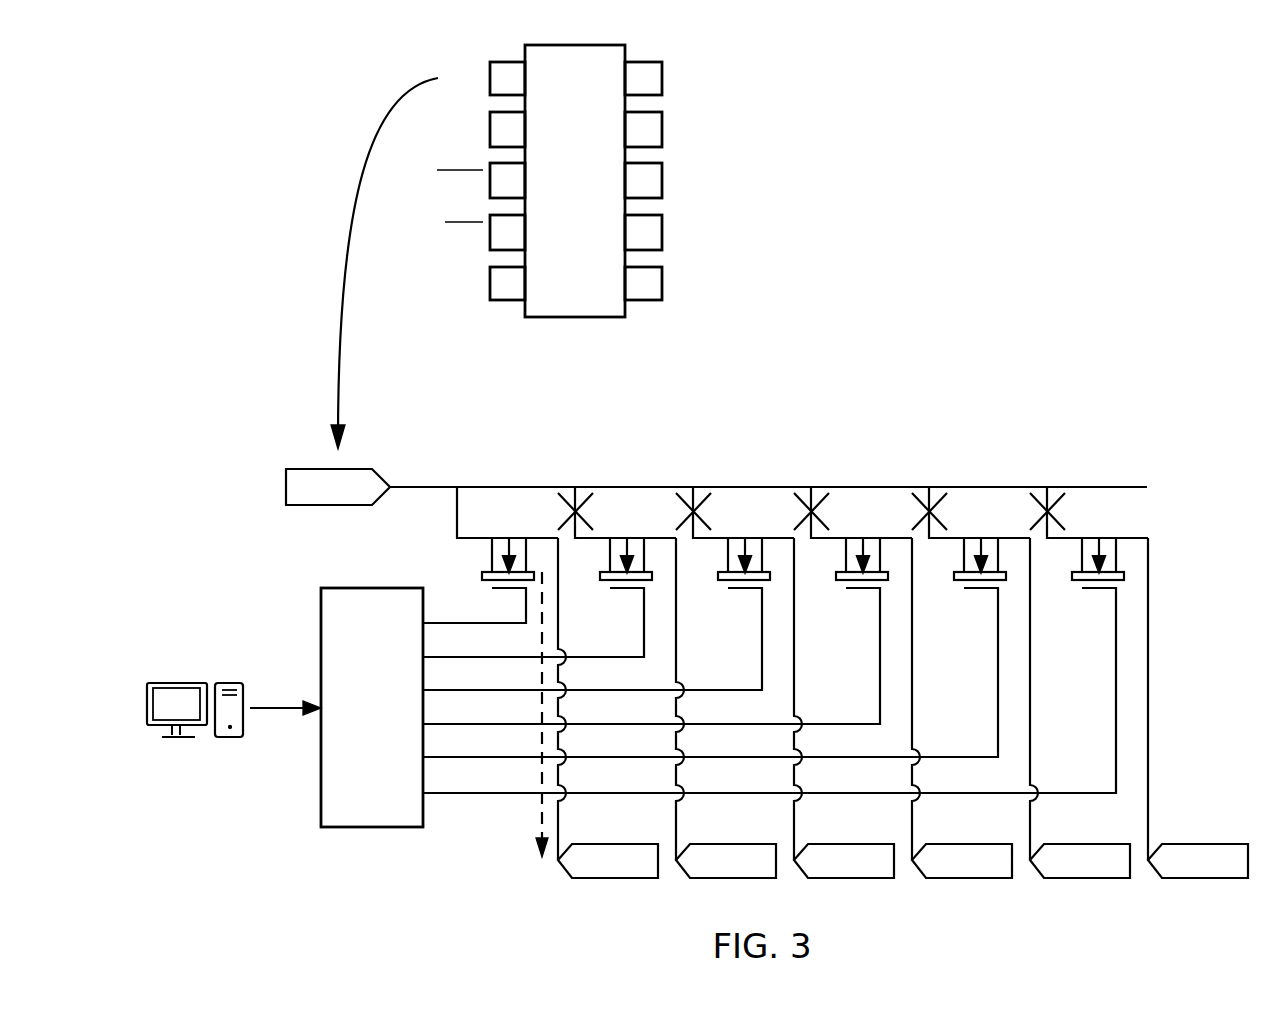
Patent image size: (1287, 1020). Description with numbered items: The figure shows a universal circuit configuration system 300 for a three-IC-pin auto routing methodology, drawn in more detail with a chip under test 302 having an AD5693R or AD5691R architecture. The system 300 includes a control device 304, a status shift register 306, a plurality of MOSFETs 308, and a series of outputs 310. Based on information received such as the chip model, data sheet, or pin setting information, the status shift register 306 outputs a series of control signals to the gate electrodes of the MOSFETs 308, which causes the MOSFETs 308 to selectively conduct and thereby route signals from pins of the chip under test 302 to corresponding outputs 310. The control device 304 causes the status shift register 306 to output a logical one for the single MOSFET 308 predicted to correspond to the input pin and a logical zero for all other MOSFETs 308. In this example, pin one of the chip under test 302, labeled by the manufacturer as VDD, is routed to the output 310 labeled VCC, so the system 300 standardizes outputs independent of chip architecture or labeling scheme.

The universal circuit configuration system 300 is at (1064, 213).
The chip under test 302 is at (575, 320).
The control device 304 is at (223, 742).
The status shift register 306 is at (395, 830).
The MOSFETs 308 is at (1110, 522).
The outputs 310 is at (633, 880).